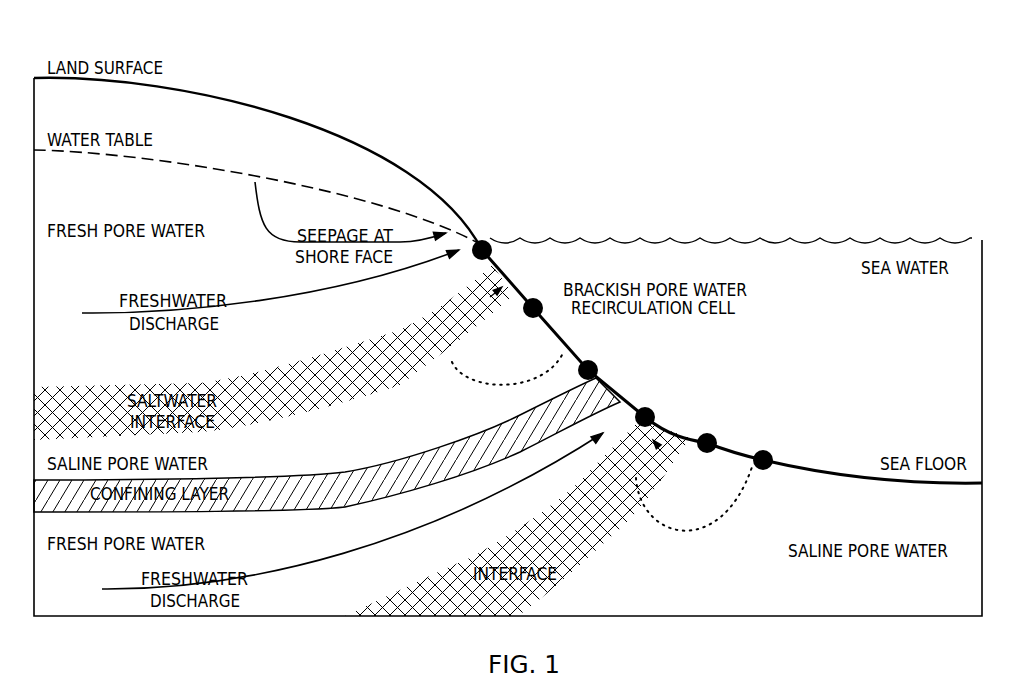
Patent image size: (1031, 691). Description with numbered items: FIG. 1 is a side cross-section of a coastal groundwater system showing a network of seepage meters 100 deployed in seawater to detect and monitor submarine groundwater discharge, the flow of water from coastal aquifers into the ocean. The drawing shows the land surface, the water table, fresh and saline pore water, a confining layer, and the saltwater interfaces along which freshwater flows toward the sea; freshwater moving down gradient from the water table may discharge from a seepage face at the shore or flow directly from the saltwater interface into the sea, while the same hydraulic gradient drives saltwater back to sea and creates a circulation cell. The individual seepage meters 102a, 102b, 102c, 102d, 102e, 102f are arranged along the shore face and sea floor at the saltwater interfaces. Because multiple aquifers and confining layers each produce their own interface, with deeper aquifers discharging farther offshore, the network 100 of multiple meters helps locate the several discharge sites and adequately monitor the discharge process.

The network of seepage meters 100 is at (900, 55).
The seepage meter 102a is at (488, 230).
The seepage meter 102b is at (542, 283).
The seepage meter 102c is at (612, 358).
The seepage meter 102d is at (662, 402).
The seepage meter 102e is at (722, 426).
The seepage meter 102f is at (782, 443).